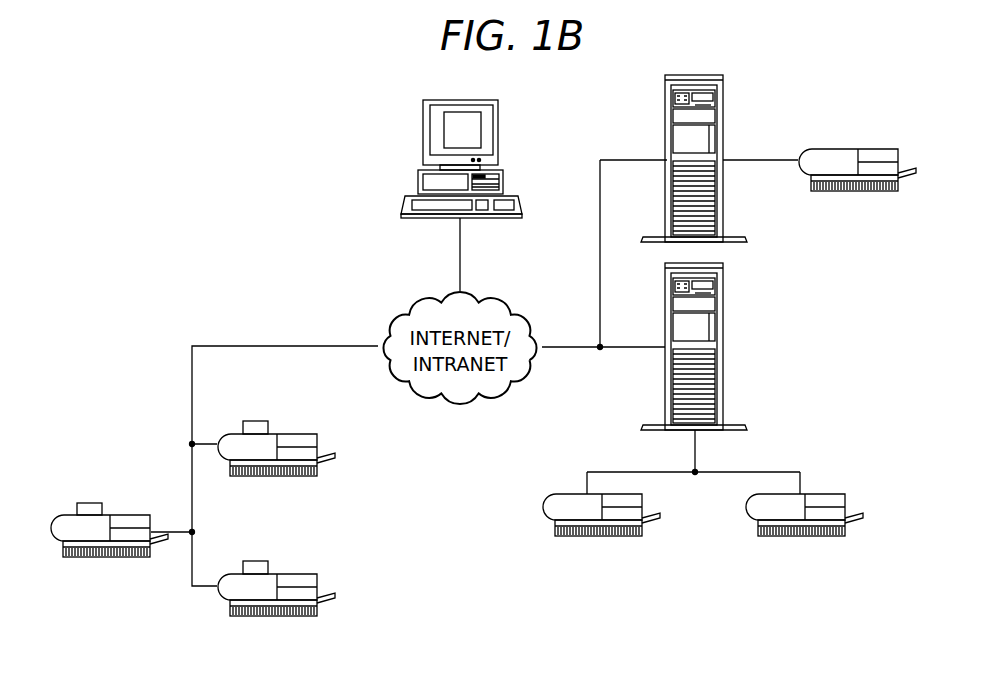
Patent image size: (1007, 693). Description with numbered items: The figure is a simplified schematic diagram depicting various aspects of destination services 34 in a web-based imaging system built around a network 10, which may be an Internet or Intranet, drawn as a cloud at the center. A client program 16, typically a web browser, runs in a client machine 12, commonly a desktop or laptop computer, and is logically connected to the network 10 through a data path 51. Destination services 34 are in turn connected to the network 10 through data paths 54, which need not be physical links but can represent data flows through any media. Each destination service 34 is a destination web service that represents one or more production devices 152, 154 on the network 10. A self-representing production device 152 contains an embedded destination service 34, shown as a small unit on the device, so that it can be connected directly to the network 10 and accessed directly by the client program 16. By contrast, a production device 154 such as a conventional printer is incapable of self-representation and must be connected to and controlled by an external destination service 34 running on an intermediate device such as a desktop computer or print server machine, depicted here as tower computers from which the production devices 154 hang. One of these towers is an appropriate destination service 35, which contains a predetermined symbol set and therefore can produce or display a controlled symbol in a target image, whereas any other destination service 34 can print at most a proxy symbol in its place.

The network 10 is at (230, 189).
The client machine 12 is at (420, 182).
The client program 16 is at (444, 128).
The data path 51 is at (460, 262).
The data path 54 is at (296, 345).
The appropriate destination service 35 is at (725, 120).
The destination service 34 is at (723, 347).
The self-representing production device 152 is at (296, 434).
The production device 154 is at (848, 149).